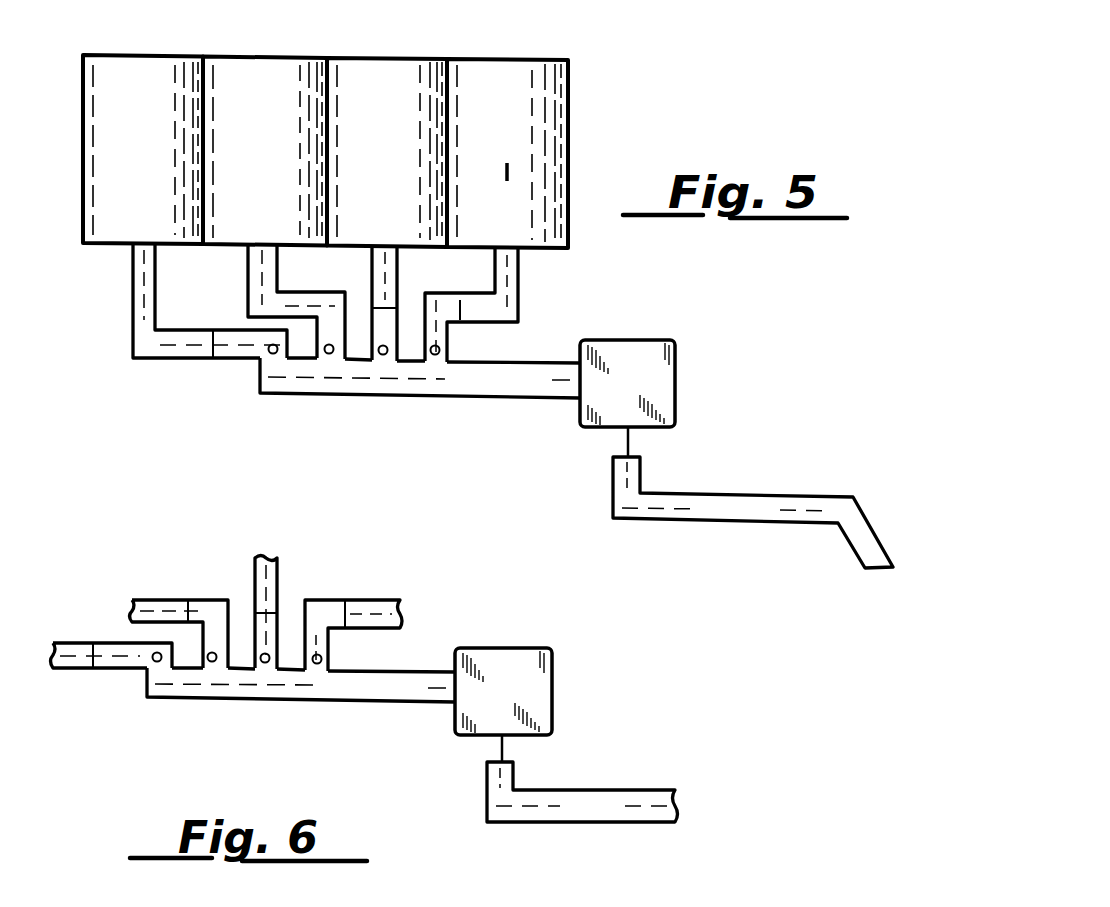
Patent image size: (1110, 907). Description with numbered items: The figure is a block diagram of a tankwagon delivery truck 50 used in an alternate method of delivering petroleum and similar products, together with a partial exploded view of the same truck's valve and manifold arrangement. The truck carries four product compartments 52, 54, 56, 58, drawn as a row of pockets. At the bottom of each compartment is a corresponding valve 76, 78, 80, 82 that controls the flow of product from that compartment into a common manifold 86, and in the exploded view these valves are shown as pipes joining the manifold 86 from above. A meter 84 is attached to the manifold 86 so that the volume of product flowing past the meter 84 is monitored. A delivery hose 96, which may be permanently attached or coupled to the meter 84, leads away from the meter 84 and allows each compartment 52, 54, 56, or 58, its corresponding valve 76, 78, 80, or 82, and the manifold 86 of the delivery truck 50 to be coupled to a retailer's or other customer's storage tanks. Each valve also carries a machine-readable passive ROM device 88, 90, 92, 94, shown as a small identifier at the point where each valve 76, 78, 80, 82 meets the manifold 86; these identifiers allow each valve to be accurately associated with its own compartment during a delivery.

In FIG. 5, the delivery truck 50 is at (582, 112).
In FIG. 5, the compartment 52 is at (510, 60).
In FIG. 5, the compartment 54 is at (388, 58).
In FIG. 5, the compartment 56 is at (267, 57).
In FIG. 5, the compartment 58 is at (142, 53).
In FIG. 5, the valve 76 is at (460, 302).
In FIG. 6, the valve 76 is at (350, 605).
In FIG. 5, the valve 78 is at (380, 307).
In FIG. 6, the valve 78 is at (260, 610).
In FIG. 5, the valve 80 is at (263, 305).
In FIG. 6, the valve 80 is at (190, 618).
In FIG. 5, the valve 82 is at (212, 345).
In FIG. 6, the valve 82 is at (92, 657).
In FIG. 5, the meter 84 is at (675, 385).
In FIG. 6, the meter 84 is at (552, 693).
In FIG. 5, the manifold 86 is at (517, 400).
In FIG. 6, the manifold 86 is at (397, 707).
In FIG. 5, the passive ROM device 88 is at (434, 356).
In FIG. 6, the passive ROM device 88 is at (316, 665).
In FIG. 5, the passive ROM device 90 is at (382, 356).
In FIG. 6, the passive ROM device 90 is at (264, 664).
In FIG. 5, the passive ROM device 92 is at (328, 355).
In FIG. 6, the passive ROM device 92 is at (211, 663).
In FIG. 5, the passive ROM device 94 is at (272, 355).
In FIG. 6, the passive ROM device 94 is at (156, 663).
In FIG. 5, the delivery hose 96 is at (755, 493).
In FIG. 6, the delivery hose 96 is at (620, 790).